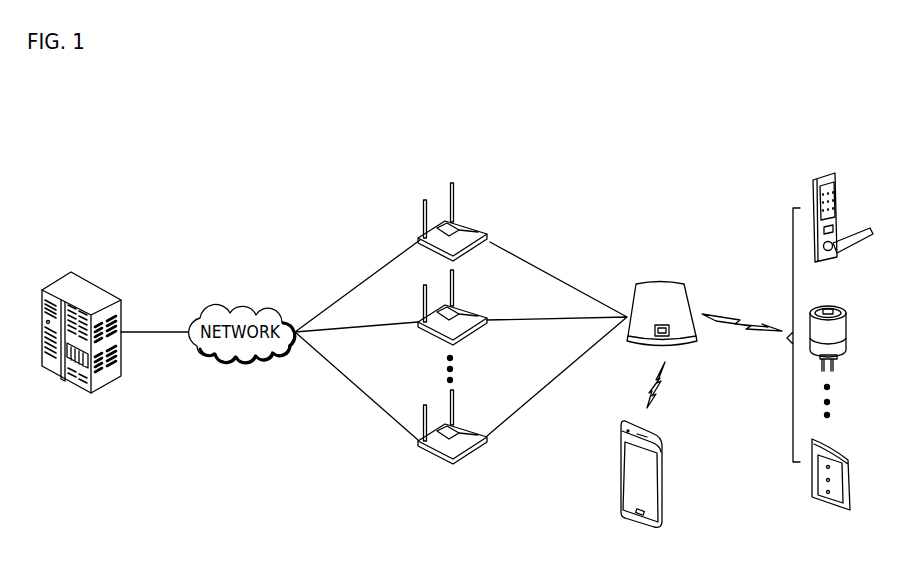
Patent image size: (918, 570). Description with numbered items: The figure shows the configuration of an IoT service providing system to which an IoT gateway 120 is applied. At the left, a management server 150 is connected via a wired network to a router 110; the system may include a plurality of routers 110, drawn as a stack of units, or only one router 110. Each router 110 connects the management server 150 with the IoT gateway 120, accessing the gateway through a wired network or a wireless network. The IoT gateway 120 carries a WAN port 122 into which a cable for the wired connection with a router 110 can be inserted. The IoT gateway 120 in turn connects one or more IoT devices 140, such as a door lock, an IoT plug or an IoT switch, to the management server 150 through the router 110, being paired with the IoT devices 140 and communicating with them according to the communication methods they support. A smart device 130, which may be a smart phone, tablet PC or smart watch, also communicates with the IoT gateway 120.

The router 110 is at (472, 227).
The IoT gateway 120 is at (668, 319).
The WAN port 122 is at (668, 336).
The smart device 130 is at (665, 485).
The IoT devices 140 is at (833, 173).
The management server 150 is at (112, 290).